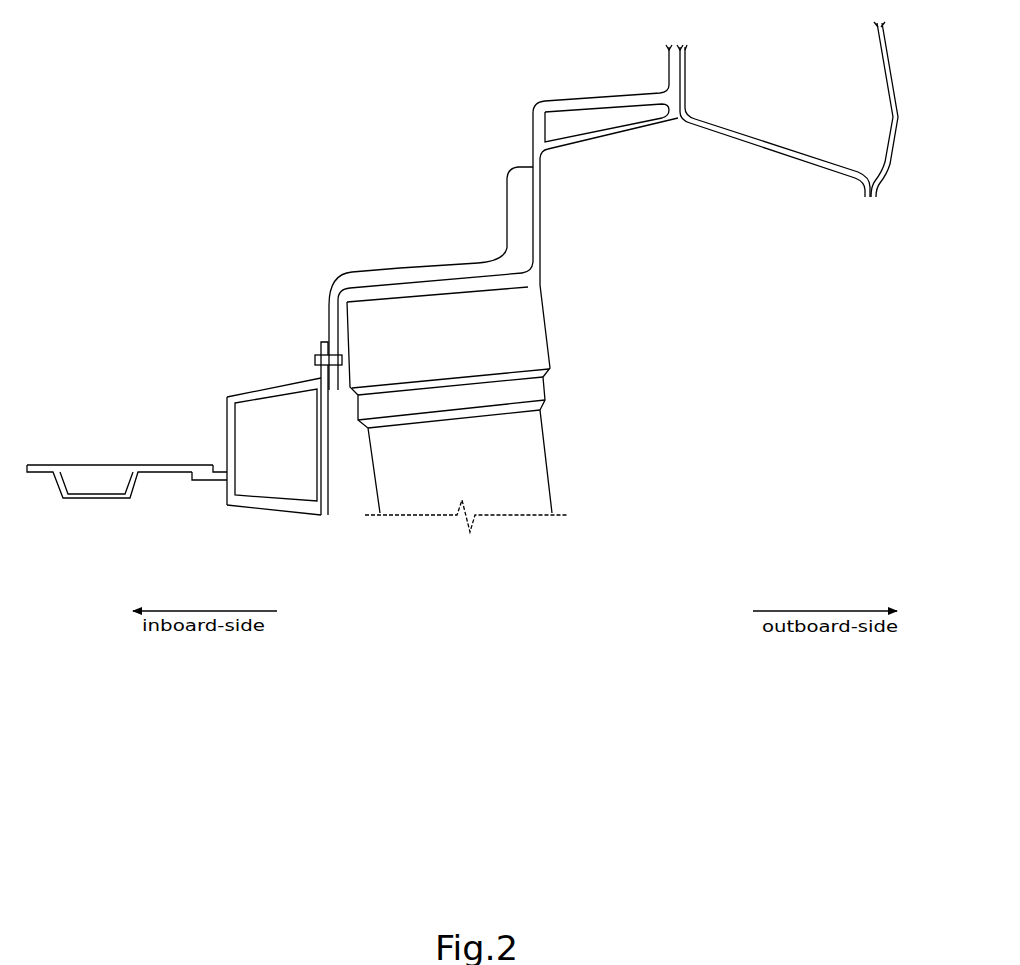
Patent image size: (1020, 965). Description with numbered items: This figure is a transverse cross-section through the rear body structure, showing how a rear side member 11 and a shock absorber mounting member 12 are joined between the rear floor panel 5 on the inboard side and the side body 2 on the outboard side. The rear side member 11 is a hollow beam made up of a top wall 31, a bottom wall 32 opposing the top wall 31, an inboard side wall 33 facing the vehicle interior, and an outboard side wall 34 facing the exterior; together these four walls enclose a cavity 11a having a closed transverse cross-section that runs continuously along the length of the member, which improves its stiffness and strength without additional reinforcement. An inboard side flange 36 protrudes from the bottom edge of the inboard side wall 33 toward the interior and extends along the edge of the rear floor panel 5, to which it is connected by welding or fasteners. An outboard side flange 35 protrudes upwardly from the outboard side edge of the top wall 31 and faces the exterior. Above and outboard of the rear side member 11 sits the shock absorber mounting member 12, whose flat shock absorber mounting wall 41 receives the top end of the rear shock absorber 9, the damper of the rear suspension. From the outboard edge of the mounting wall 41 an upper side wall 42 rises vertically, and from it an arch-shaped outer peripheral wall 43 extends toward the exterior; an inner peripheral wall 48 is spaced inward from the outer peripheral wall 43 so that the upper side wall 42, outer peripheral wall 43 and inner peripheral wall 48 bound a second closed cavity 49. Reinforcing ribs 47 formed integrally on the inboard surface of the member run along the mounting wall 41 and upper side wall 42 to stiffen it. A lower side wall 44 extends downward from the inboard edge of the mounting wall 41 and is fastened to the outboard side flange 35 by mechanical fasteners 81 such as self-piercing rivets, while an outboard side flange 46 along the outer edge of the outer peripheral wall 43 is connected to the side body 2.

The side body 2 is at (892, 60).
The rear floor panel 5 is at (120, 465).
The rear shock absorber 9 is at (548, 443).
The rear side member 11 is at (259, 461).
The cavity 11a is at (300, 463).
The shock absorber mounting member 12 is at (575, 217).
The top wall 31 is at (258, 387).
The bottom wall 32 is at (277, 518).
The inboard side wall 33 is at (225, 407).
The outboard side wall 34 is at (330, 498).
The outboard side flange 35 is at (317, 347).
The inboard side flange 36 is at (208, 482).
The shock absorber mounting wall 41 is at (455, 280).
The upper side wall 42 is at (540, 217).
The outer peripheral wall 43 is at (585, 98).
The lower side wall 44 is at (327, 313).
The outboard side flange 46 is at (667, 68).
The reinforcing rib 47 is at (507, 199).
The inner peripheral wall 48 is at (598, 139).
The cavity 49 is at (612, 121).
The mechanical fastener 81 is at (315, 357).